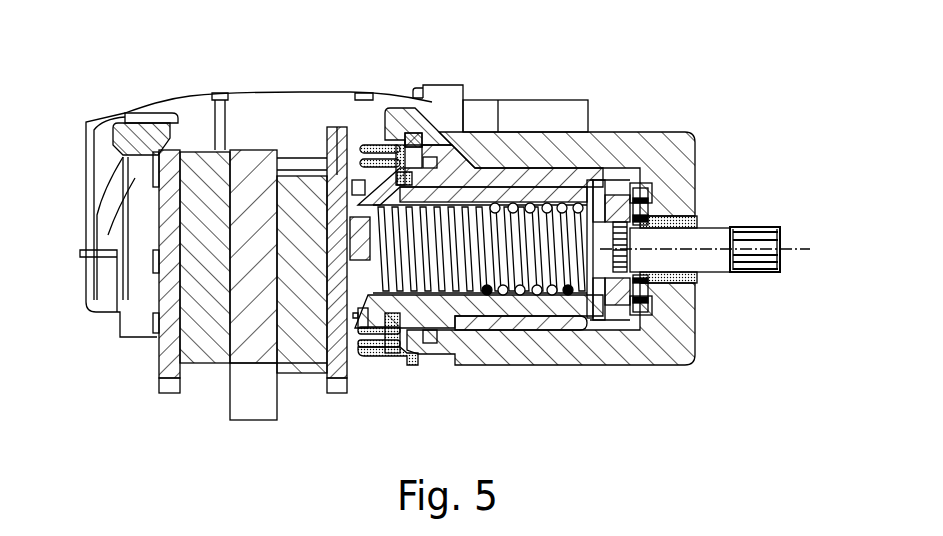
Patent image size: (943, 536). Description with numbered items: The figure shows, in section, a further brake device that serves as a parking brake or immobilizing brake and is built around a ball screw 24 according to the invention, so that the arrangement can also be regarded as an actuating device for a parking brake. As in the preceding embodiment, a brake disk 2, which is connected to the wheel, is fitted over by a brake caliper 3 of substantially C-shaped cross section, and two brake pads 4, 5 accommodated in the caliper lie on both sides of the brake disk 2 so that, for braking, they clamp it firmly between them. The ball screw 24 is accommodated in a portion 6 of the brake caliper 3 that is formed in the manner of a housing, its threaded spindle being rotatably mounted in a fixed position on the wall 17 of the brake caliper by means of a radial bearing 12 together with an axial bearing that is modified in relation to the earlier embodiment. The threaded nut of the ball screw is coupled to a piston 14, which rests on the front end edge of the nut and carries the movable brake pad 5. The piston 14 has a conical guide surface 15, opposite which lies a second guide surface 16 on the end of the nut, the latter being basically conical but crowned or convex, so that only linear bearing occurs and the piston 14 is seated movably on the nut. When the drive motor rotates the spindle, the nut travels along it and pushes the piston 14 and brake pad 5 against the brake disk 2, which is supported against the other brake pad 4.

The brake disk 2 is at (248, 400).
The brake caliper 3 is at (263, 100).
The brake pad 4 is at (188, 352).
The brake pad 5 is at (300, 342).
The portion of the brake caliper 6 is at (560, 118).
The radial bearing 12 is at (680, 209).
The piston 14 is at (437, 316).
The conical guide surface 15 is at (510, 187).
The second guide surface 16 is at (462, 187).
The wall of the brake caliper 17 is at (677, 343).
The ball screw 24 is at (574, 177).